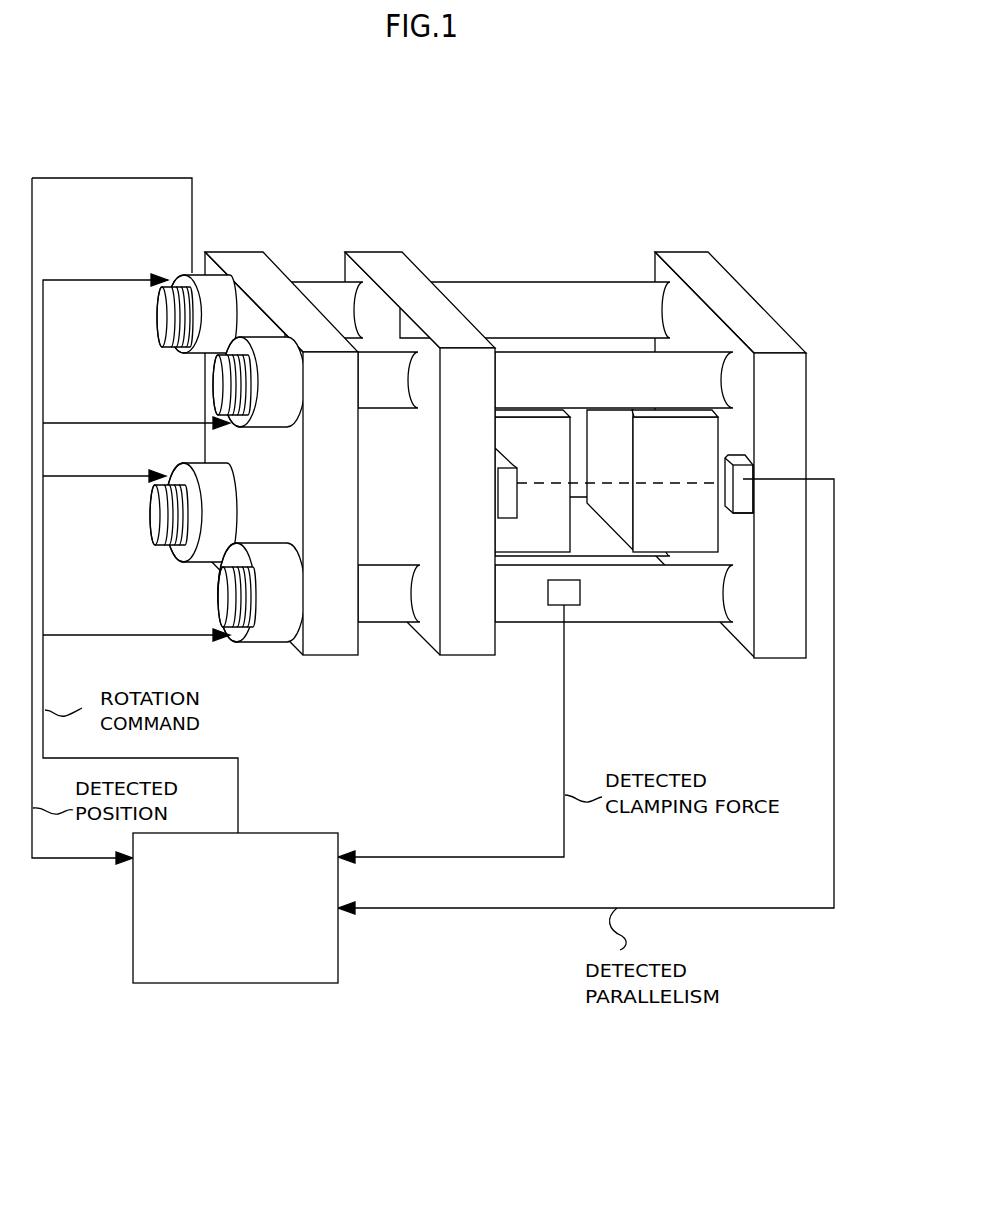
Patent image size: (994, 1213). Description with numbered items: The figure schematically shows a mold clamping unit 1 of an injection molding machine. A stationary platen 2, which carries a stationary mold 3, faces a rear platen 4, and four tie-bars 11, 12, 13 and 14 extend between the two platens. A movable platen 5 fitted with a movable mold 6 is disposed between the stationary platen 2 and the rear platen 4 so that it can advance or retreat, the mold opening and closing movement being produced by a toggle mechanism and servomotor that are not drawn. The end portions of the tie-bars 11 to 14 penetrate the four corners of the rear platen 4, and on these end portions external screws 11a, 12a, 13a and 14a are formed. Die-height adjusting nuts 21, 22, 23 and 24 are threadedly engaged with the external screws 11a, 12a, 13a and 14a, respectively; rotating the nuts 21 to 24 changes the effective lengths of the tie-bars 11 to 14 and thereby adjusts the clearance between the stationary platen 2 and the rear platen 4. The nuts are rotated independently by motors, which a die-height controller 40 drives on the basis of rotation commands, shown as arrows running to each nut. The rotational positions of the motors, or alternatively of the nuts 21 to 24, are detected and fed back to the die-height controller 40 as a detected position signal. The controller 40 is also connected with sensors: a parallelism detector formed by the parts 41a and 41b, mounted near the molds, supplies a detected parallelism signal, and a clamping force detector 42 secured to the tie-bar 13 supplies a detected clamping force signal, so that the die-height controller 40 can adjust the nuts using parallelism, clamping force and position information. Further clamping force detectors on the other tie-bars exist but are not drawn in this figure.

The mold clamping unit 1 is at (624, 158).
The stationary platen 2 is at (720, 278).
The stationary mold 3 is at (670, 432).
The rear platen 4 is at (243, 267).
The movable platen 5 is at (388, 267).
The movable mold 6 is at (505, 437).
The tie-bar 11 is at (517, 302).
The tie-bar 12 is at (612, 370).
The tie-bar 13 is at (643, 605).
The tie-bar 14 is at (592, 543).
The external screw 11a is at (180, 318).
The external screw 12a is at (247, 385).
The external screw 13a is at (245, 610).
The external screw 14a is at (172, 530).
The die-height adjusting nut 21 is at (183, 277).
The die-height adjusting nut 22 is at (230, 423).
The die-height adjusting nut 23 is at (245, 643).
The die-height adjusting nut 24 is at (183, 558).
The die-height controller 40 is at (232, 983).
The parallelism detector 41a is at (740, 515).
The parallelism detector 41b is at (515, 518).
The clamping force detector 42 is at (556, 606).